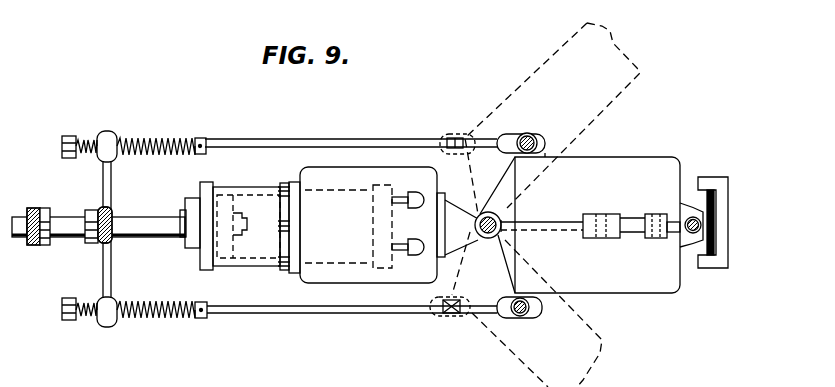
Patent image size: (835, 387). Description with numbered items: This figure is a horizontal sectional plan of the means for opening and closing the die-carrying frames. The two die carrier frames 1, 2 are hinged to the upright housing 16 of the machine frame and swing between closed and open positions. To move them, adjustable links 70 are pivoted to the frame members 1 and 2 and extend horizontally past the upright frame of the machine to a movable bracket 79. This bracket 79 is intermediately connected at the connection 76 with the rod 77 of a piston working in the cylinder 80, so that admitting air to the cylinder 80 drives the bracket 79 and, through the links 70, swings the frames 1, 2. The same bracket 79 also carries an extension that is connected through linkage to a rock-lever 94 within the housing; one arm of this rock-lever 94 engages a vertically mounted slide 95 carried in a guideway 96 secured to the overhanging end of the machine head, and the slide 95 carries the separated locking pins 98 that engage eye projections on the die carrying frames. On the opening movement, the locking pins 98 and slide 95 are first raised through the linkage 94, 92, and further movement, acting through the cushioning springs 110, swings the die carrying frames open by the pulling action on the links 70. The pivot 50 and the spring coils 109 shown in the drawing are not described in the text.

The die carrier frame 1 is at (505, 347).
The die carrier frame 2 is at (620, 93).
The upright housing 16 is at (381, 285).
The pivot pin 50 is at (503, 220).
The adjustable links 70 is at (352, 311).
The intermediate connection 76 is at (98, 213).
The piston rod 77 is at (169, 222).
The movable bracket 79 is at (112, 262).
The cylinder 80 is at (242, 227).
The linkage member 92 is at (562, 221).
The rock-lever 94 is at (636, 217).
The slide 95 is at (715, 247).
The guideway 96 is at (728, 230).
The locking pins 98 is at (682, 238).
The spring 109 is at (140, 143).
The cushioning springs 110 is at (94, 139).